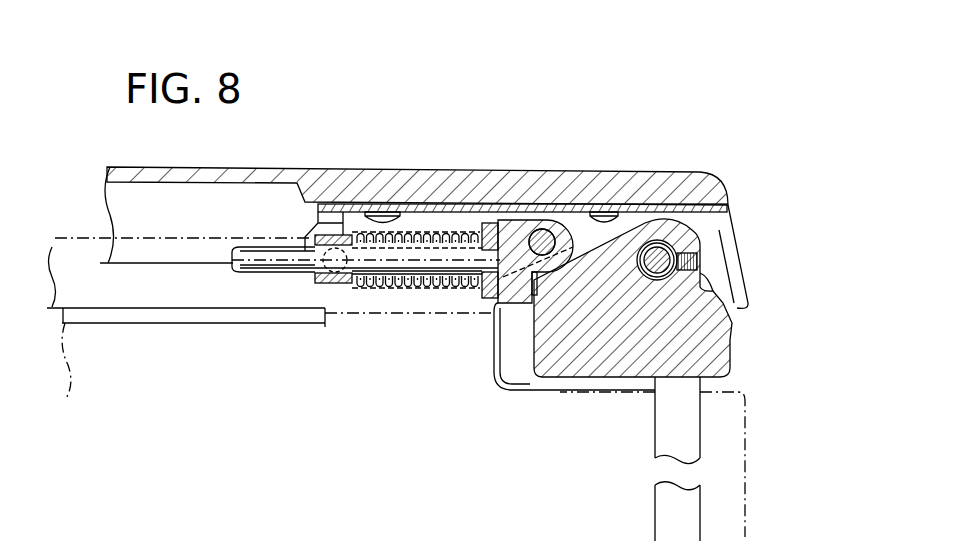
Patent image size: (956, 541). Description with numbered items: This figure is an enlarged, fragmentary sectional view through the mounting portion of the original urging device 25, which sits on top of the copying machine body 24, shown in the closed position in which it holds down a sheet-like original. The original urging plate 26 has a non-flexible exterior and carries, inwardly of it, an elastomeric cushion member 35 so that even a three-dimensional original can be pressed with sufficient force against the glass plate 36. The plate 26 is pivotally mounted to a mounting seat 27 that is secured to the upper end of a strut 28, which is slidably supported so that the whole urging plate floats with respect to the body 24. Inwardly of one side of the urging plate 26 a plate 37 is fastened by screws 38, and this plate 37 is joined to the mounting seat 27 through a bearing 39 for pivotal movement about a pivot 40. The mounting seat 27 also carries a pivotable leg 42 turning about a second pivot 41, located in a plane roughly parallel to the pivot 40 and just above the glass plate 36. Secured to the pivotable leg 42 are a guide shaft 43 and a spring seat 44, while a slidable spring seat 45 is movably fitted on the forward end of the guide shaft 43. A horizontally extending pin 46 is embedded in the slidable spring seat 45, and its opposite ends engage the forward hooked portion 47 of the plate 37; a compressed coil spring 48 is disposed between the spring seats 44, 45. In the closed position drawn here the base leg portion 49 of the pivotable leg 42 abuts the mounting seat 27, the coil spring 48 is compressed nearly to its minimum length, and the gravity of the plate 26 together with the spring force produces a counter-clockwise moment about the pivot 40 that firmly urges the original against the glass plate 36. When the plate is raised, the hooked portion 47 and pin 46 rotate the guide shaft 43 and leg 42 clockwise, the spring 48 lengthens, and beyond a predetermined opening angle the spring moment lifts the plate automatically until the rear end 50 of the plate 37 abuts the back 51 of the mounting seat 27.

The copying machine body 24 is at (748, 453).
The original urging device 25 is at (618, 98).
The original urging plate 26 is at (337, 178).
The mounting seat 27 is at (720, 360).
The strut 28 is at (655, 432).
The cushion member 35 is at (82, 248).
The glass plate 36 is at (147, 320).
The plate 37 is at (633, 218).
The screw 38 is at (387, 210).
The bearing 39 is at (673, 241).
The pivot 40 is at (704, 224).
The pivot 41 is at (542, 228).
The pivotable leg 42 is at (515, 217).
The guide shaft 43 is at (263, 250).
The spring seat 44 is at (490, 217).
The slidable spring seat 45 is at (345, 228).
The pin 46 is at (317, 270).
The forward hooked portion 47 is at (347, 283).
The coil spring 48 is at (417, 288).
The base leg portion 49 is at (517, 307).
The rear end 50 is at (723, 236).
The back 51 is at (732, 323).